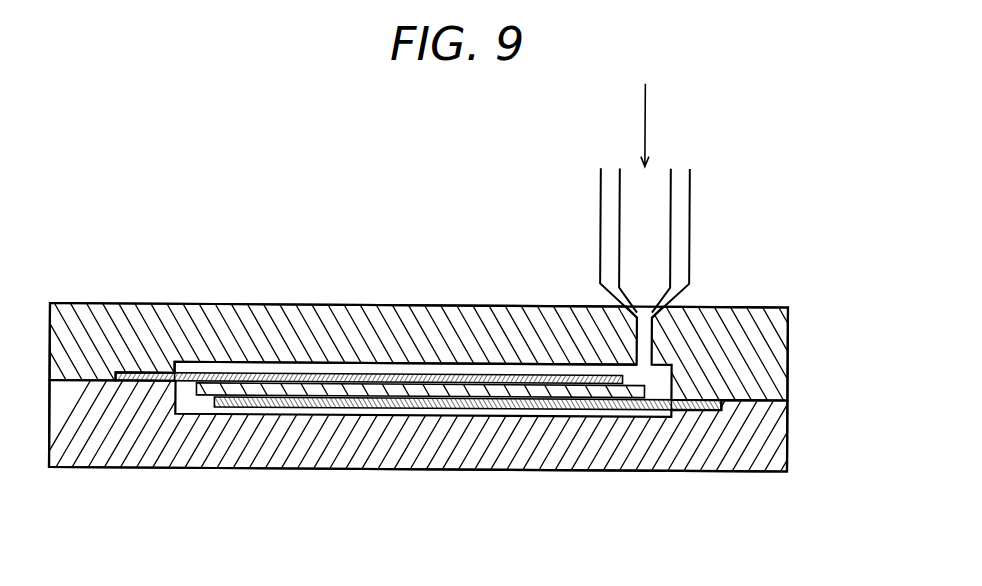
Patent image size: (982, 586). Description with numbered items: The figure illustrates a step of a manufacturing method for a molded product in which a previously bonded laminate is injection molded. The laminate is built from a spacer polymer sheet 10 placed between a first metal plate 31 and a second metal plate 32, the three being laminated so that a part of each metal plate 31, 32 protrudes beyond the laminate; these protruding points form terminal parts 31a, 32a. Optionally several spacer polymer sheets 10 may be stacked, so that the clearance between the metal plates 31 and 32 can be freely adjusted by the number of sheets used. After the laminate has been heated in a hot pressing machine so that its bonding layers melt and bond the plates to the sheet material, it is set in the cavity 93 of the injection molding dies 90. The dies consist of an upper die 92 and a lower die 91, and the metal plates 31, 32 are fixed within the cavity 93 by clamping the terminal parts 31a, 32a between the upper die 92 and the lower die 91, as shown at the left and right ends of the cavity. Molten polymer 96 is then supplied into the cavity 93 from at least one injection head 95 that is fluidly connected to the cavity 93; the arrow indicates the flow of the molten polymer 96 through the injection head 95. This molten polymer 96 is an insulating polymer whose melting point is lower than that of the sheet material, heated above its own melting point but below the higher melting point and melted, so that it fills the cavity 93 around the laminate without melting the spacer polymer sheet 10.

The spacer polymer sheet 10 is at (418, 376).
The metal plate 31 is at (515, 409).
The terminal part 31a is at (702, 411).
The metal plate 32 is at (509, 377).
The terminal part 32a is at (148, 371).
The injection molding dies 90 is at (781, 283).
The lower die 91 is at (238, 444).
The upper die 92 is at (220, 304).
The cavity 93 is at (303, 363).
The injection head 95 is at (689, 231).
The molten polymer 96 is at (645, 116).